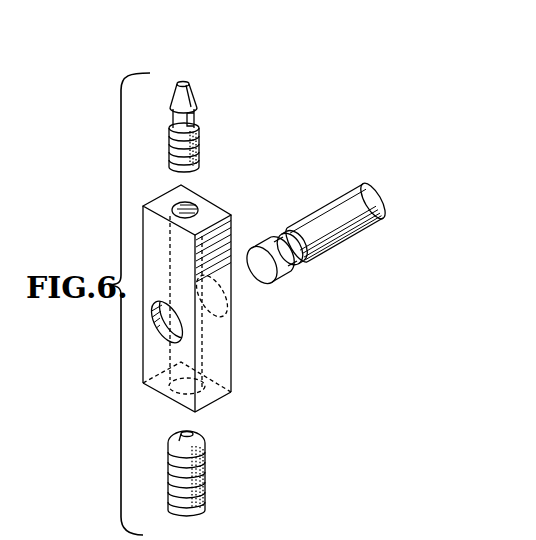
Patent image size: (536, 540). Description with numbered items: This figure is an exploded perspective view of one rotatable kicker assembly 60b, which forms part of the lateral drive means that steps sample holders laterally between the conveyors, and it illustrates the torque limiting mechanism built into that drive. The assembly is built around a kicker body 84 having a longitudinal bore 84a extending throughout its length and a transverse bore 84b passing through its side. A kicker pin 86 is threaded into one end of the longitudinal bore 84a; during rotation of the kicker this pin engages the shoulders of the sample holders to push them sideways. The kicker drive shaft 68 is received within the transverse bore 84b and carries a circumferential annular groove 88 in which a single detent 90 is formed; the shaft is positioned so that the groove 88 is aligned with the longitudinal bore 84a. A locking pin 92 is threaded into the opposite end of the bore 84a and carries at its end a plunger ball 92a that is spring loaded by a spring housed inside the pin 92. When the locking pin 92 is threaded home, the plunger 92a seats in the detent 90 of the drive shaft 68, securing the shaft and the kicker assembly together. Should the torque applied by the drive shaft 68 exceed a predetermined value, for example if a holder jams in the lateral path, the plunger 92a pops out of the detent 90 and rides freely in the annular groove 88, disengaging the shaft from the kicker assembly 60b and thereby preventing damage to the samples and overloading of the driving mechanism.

The kicker assembly 60b is at (240, 283).
The kicker drive shaft 68 is at (320, 238).
The kicker body 84 is at (216, 283).
The longitudinal bore 84a is at (188, 199).
The transverse bore 84b is at (171, 317).
The kicker pin 86 is at (198, 101).
The circumferential annular groove 88 is at (273, 236).
The detent 90 is at (298, 271).
The locking pin 92 is at (227, 468).
The plunger ball 92a is at (196, 429).